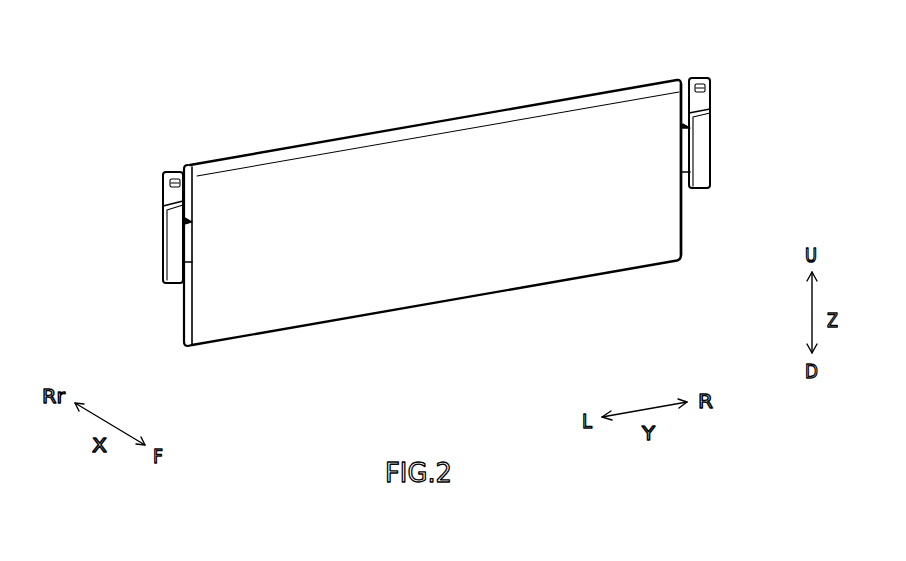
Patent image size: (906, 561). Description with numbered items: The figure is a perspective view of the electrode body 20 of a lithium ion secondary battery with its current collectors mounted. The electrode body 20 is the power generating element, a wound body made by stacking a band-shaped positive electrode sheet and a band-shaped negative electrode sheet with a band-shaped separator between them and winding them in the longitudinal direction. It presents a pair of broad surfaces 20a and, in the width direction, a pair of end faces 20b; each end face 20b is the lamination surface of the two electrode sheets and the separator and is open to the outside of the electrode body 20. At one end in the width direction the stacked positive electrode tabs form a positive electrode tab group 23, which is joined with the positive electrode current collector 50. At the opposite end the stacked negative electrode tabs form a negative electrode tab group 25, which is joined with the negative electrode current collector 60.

The electrode body 20 is at (416, 206).
The broad surface 20a is at (445, 145).
The end face 20b is at (184, 323).
The positive electrode tab group 23 is at (189, 243).
The negative electrode tab group 25 is at (684, 173).
The positive electrode current collector 50 is at (162, 252).
The negative electrode current collector 60 is at (714, 147).